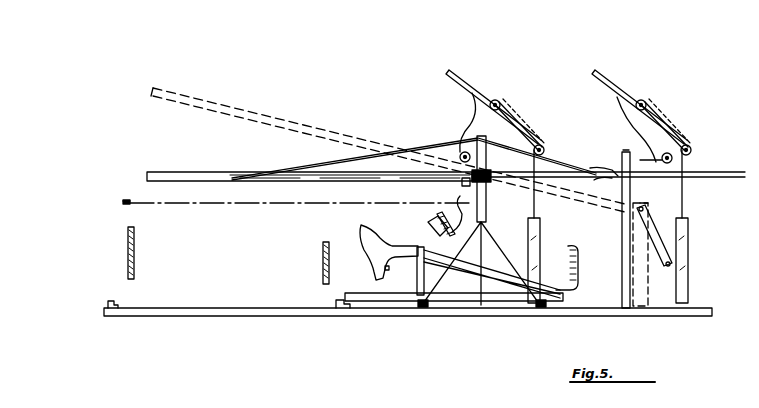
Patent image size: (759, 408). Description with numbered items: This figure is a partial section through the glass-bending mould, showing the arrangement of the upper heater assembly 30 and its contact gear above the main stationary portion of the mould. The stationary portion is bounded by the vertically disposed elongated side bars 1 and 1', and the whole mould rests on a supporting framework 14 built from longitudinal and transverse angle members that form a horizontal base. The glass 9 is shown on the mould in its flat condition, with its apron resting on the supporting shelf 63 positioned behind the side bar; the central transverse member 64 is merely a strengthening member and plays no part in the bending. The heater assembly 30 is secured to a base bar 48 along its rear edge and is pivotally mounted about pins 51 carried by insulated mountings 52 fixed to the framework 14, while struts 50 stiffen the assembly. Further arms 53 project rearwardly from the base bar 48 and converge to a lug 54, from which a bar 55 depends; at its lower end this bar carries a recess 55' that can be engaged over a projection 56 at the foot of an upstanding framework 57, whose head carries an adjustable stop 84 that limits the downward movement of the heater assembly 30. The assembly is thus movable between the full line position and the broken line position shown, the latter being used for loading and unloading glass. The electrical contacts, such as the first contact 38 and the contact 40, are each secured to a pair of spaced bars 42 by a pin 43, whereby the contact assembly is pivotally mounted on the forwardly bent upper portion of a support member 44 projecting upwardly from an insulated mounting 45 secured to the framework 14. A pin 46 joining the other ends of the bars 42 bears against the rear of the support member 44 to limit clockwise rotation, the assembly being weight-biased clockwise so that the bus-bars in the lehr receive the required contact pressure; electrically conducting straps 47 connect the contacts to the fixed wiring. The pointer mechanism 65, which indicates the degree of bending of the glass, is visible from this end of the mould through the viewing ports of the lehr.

The side bar 1 is at (142, 253).
The side bar 1' is at (425, 226).
The glass 9 is at (218, 207).
The supporting framework 14 is at (566, 310).
The upper heater assembly 30 is at (168, 168).
The first contact 38 is at (603, 80).
The contact 40 is at (457, 84).
The spaced bars 42 is at (518, 126).
The pin 43 is at (499, 102).
The support member 44 is at (541, 132).
The insulated mounting 45 is at (541, 230).
The pin 46 is at (546, 149).
The electrically conducting strap 47 is at (470, 119).
The base bar 48 is at (466, 183).
The strut 50 is at (403, 150).
The pin 51 is at (488, 178).
The insulated mounting 52 is at (486, 212).
The arm 53 is at (594, 168).
The lug 54 is at (700, 175).
The bar 55 is at (683, 229).
The recess 55' is at (656, 249).
The projection 56 is at (637, 309).
The upstanding framework 57 is at (629, 162).
The supporting shelf 63 is at (451, 216).
The central transverse member 64 is at (322, 257).
The pointer mechanism 65 is at (372, 257).
The adjustable stop 84 is at (605, 176).